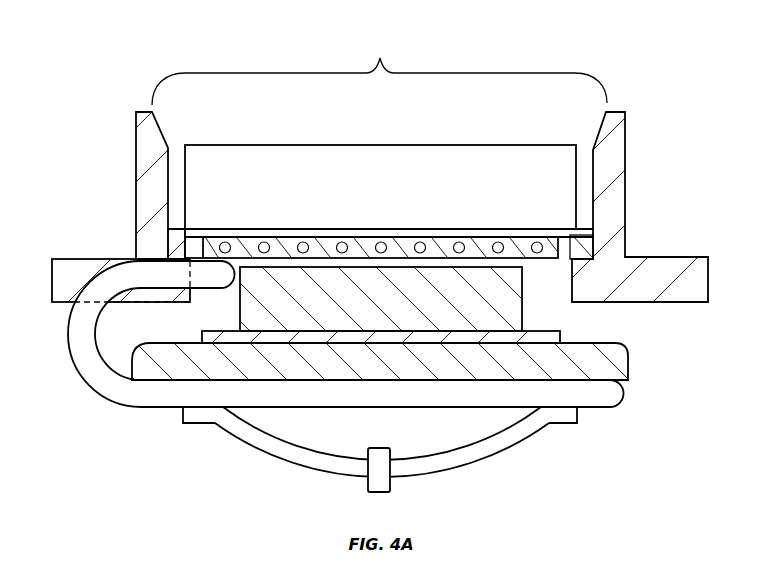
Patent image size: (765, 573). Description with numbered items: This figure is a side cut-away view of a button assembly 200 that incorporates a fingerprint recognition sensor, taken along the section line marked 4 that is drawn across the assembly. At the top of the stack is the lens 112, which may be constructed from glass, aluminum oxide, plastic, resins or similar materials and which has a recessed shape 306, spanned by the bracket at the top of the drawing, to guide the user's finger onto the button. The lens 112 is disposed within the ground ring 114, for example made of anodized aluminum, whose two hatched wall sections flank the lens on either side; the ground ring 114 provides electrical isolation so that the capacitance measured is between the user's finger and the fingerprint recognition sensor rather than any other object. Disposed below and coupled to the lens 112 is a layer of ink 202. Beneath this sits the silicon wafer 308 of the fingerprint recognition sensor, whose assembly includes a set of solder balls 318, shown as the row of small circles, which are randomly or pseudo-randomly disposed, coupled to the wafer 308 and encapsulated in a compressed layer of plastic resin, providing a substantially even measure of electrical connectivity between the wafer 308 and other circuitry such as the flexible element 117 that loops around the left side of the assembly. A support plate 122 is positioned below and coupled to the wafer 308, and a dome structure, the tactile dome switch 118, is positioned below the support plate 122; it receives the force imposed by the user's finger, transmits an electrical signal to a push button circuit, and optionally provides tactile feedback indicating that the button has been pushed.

The button assembly 200 is at (377, 254).
The recessed shape 306 is at (379, 71).
The lens 112 is at (236, 141).
The ground ring 114 is at (629, 110).
The layer of ink 202 is at (562, 228).
The solder balls 318 is at (536, 270).
The silicon wafer 308 is at (273, 272).
The flexible element 117 is at (68, 329).
The support plate 122 is at (634, 366).
The tactile dome switch 118 is at (505, 452).
The section line 4- 4 is at (745, 247).